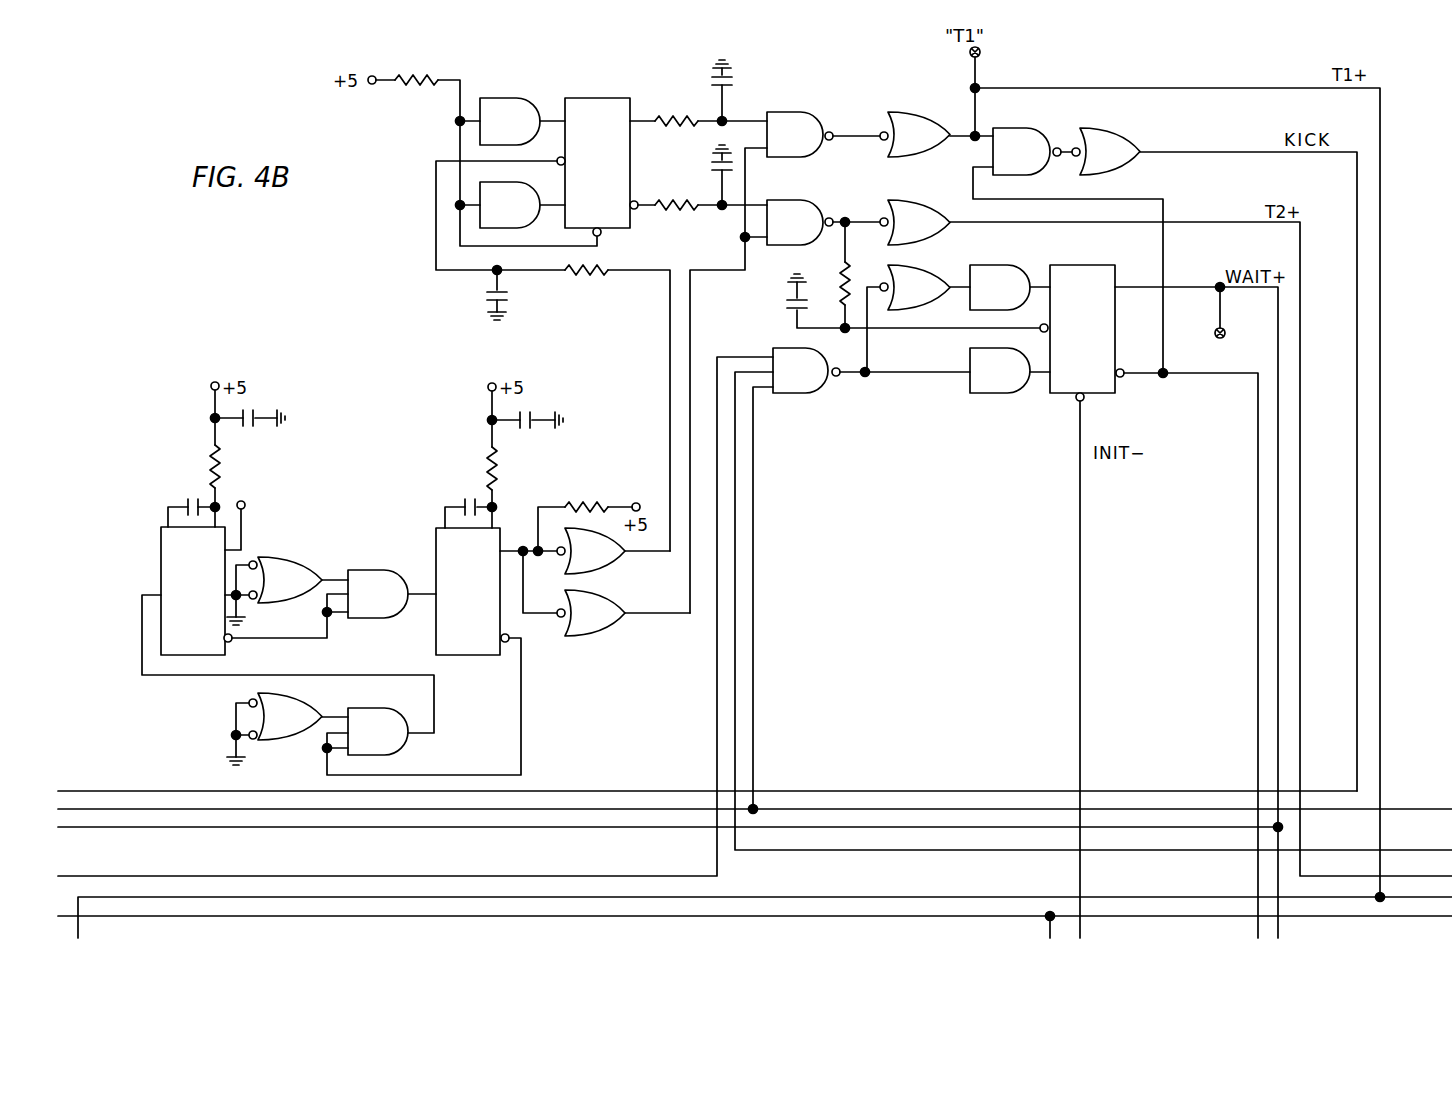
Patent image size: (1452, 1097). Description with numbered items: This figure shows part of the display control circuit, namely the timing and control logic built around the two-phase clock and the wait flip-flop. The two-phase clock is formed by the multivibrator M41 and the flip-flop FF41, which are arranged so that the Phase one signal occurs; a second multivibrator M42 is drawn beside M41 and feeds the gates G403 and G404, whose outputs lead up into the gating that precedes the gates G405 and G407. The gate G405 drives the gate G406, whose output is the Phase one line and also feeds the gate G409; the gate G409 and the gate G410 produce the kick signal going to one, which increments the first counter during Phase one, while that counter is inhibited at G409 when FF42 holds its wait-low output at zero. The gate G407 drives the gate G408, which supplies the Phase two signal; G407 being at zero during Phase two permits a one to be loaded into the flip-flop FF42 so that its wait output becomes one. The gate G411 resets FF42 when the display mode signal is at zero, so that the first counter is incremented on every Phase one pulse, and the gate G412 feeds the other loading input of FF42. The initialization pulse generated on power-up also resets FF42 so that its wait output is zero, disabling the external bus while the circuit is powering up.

The logic gate G403 is at (591, 551).
The NOR gate G404 is at (591, 613).
The NAND gate G405 is at (800, 134).
The NOR gate G406 is at (915, 134).
The logic gate G407 is at (800, 222).
The NOR gate G408 is at (915, 222).
The logic gate G409 is at (1027, 151).
The logic gate G410 is at (1106, 151).
The logic gate G411 is at (806, 370).
The NOR gate G412 is at (915, 287).
The flip-flop FF41 is at (597, 167).
The flip-flop FF42 is at (1082, 333).
The monostable multivibrator M41 is at (196, 591).
The monostable multivibrator M42 is at (472, 591).